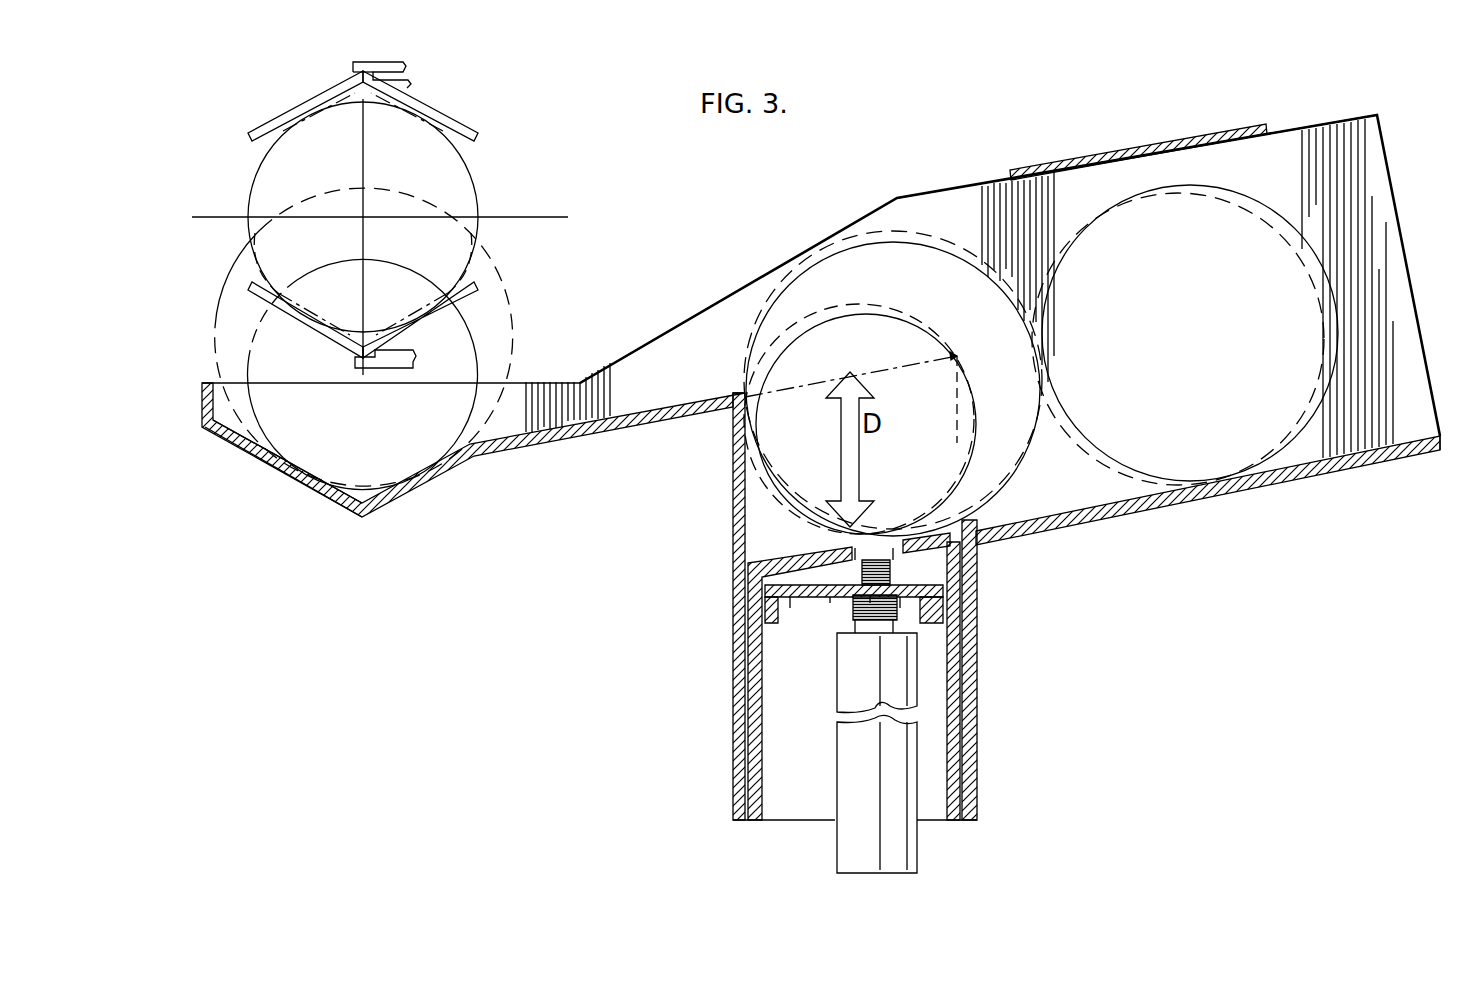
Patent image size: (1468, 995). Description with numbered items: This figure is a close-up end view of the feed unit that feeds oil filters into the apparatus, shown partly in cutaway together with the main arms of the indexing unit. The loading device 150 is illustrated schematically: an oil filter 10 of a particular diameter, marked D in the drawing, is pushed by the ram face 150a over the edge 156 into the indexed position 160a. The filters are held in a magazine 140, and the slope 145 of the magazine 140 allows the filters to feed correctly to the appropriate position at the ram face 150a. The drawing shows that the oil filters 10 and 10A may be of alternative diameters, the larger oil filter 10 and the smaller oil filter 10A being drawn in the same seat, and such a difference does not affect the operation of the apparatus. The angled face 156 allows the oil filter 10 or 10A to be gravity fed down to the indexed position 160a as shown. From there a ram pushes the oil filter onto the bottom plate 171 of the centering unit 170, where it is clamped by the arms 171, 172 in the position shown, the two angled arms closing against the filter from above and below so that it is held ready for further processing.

The oil filter 10 is at (858, 272).
The oil filter 10A is at (458, 193).
The magazine 140 is at (1413, 247).
The slope 145 is at (1309, 470).
The loading device 150 is at (977, 650).
The ram face 150a is at (927, 536).
The edge 156 is at (640, 408).
The indexed position 160a is at (333, 493).
The centering unit 170 is at (463, 130).
The arm 171 is at (249, 298).
The arm 172 is at (262, 127).